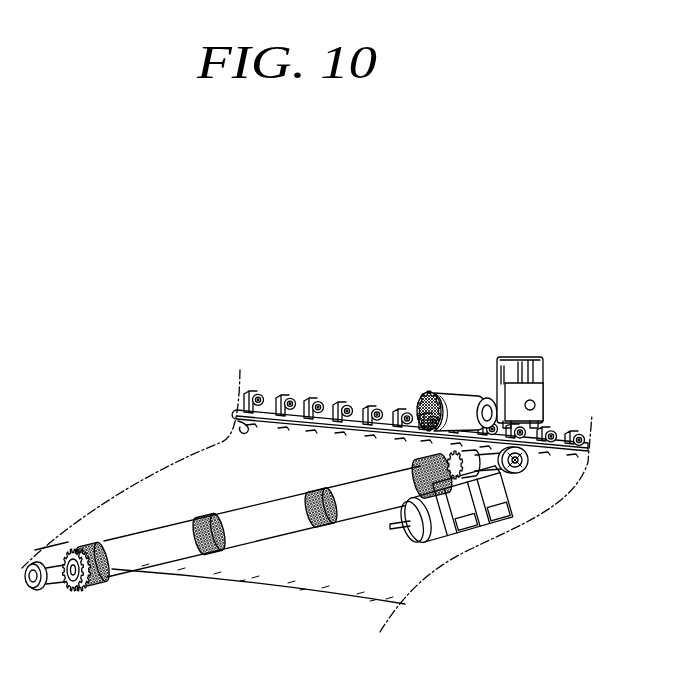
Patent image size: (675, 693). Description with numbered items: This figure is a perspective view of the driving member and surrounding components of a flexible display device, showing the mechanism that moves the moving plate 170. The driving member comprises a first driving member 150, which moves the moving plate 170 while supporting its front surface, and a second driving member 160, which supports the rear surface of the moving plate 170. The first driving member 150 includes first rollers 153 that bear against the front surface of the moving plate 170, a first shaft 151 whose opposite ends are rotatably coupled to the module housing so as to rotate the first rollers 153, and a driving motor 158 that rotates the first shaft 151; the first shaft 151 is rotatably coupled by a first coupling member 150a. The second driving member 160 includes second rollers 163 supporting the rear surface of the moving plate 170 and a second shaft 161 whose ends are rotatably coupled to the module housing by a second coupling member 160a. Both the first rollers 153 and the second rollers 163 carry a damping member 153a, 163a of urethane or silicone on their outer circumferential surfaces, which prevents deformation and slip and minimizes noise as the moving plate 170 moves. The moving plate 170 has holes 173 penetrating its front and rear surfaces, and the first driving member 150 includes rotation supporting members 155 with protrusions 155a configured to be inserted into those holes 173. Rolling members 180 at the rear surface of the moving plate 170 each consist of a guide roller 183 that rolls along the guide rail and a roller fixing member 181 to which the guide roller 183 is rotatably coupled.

The first driving member 150 is at (302, 547).
The first coupling member 150a is at (527, 470).
The first shaft 151 is at (162, 555).
The first rollers 153 is at (236, 547).
The damping member 153a is at (207, 515).
The rotation supporting members 155 is at (83, 590).
The protrusions 155a is at (71, 595).
The driving motor 158 is at (456, 520).
The second driving member 160 is at (488, 361).
The second coupling member 160a is at (540, 388).
The second shaft 161 is at (473, 410).
The second rollers 163 is at (448, 390).
The damping member 163a is at (417, 407).
The moving plate 170 is at (368, 563).
The holes 173 is at (232, 432).
The rolling members 180 is at (410, 362).
The roller fixing member 181 is at (280, 395).
The guide roller 183 is at (292, 398).